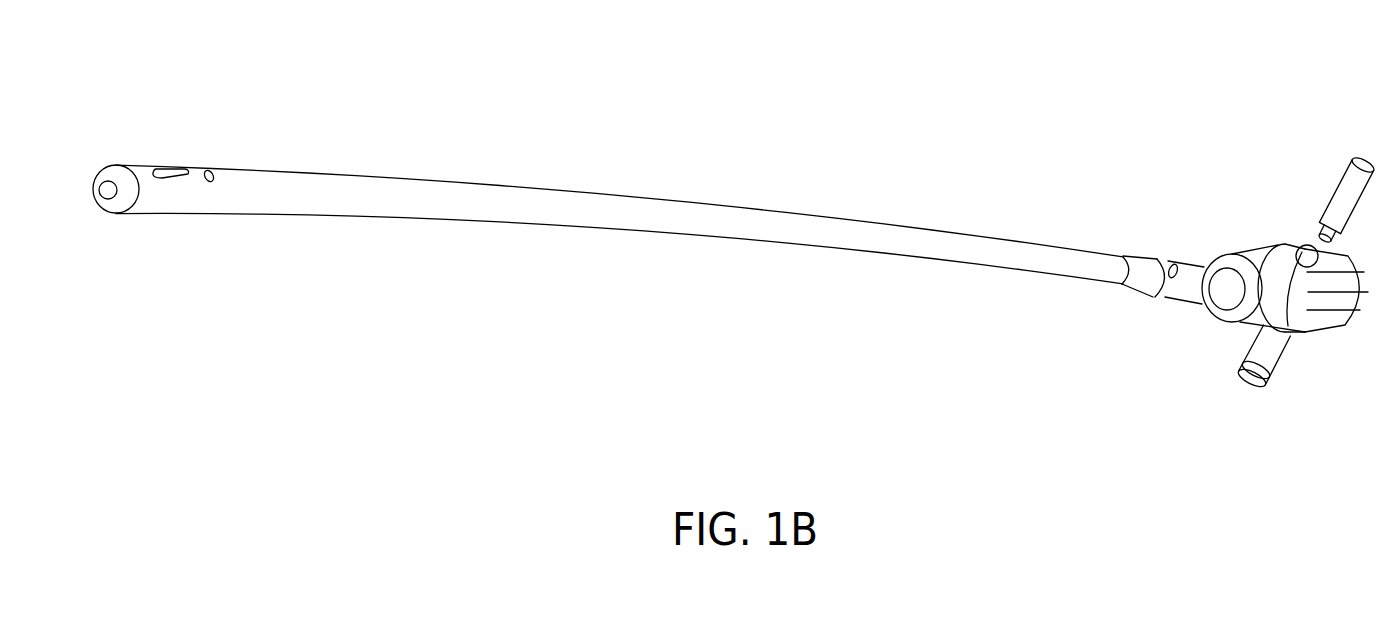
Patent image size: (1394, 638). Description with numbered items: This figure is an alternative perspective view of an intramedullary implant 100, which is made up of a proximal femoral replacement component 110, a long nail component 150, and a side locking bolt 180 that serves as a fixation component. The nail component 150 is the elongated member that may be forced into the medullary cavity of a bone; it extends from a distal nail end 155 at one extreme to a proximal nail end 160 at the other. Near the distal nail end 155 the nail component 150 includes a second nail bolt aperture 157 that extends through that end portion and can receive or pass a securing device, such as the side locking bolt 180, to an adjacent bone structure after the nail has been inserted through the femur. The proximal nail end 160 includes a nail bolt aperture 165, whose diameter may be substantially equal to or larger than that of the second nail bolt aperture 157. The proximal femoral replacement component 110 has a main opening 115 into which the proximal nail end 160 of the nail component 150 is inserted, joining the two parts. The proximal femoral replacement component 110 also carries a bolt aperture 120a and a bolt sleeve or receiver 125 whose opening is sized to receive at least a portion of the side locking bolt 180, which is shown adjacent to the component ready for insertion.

The intramedullary implant 100 is at (962, 78).
The proximal femoral replacement component 110 is at (1305, 370).
The main opening 115 is at (1237, 305).
The bolt aperture 120a is at (1308, 247).
The bolt sleeve or receiver 125 is at (1235, 406).
The nail component 150 is at (546, 158).
The distal nail end 155 is at (180, 242).
The second nail bolt aperture 157 is at (206, 168).
The proximal nail end 160 is at (1145, 223).
The nail bolt aperture 165 is at (1180, 263).
The side locking bolt 180 is at (1352, 132).